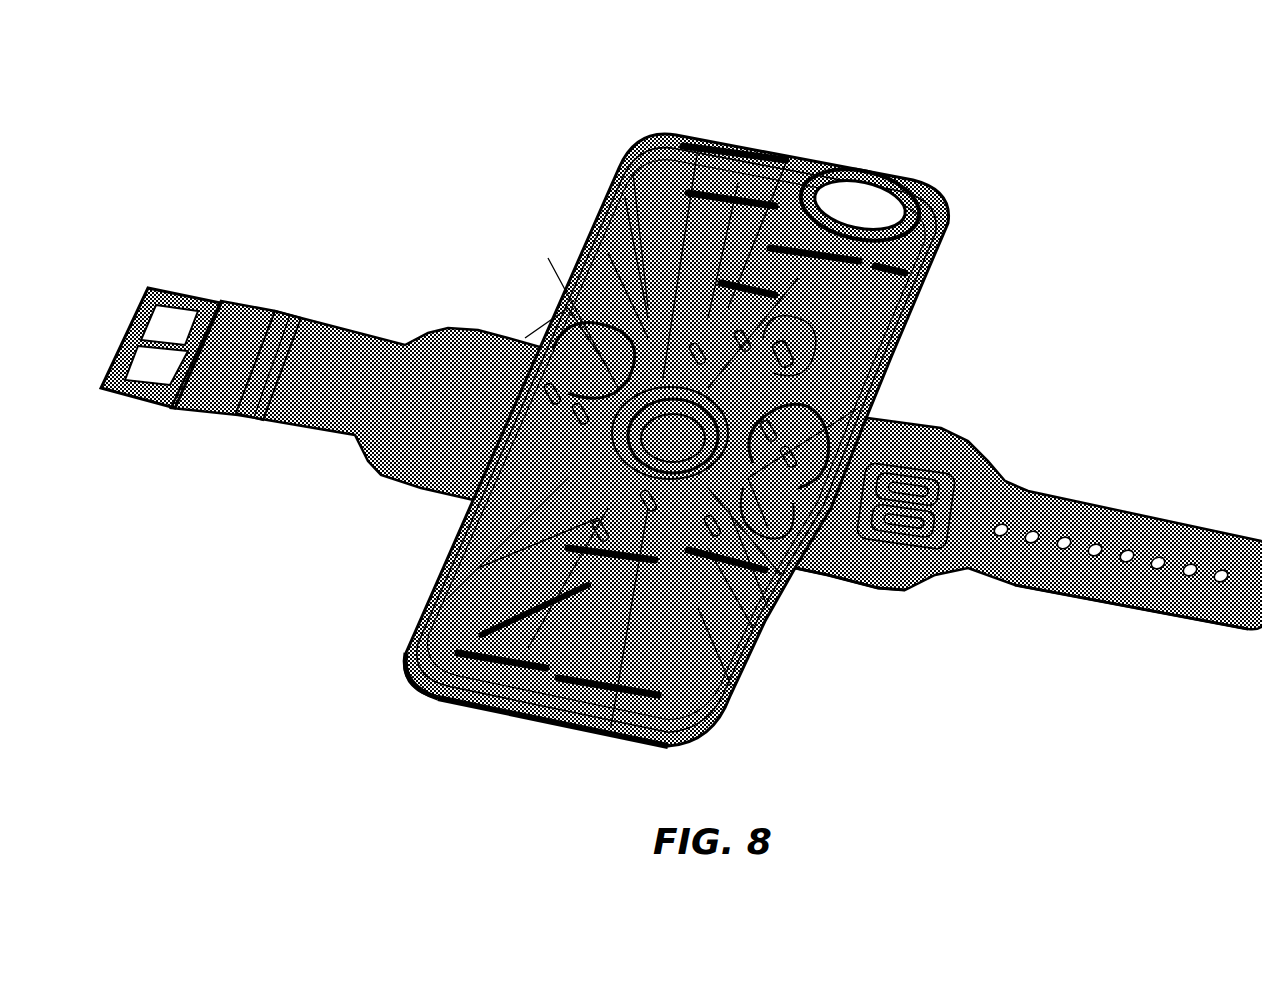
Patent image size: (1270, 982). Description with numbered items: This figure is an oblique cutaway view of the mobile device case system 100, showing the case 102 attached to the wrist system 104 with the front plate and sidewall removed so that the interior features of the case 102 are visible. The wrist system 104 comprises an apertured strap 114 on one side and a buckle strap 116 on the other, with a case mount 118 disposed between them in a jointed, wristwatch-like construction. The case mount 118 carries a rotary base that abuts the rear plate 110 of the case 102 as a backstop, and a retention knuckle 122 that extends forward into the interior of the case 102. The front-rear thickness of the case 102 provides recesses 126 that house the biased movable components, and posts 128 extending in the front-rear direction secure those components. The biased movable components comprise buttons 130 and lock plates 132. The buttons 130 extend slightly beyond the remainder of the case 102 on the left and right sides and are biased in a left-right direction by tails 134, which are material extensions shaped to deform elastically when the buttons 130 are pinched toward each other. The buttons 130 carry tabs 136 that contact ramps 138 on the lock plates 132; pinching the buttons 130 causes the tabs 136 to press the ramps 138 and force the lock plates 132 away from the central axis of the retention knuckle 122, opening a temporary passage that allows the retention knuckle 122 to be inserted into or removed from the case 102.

The mobile device case system (MDCS) 100 is at (681, 410).
The case 102 is at (697, 427).
The wrist system 104 is at (681, 458).
The rear plate 110 is at (740, 160).
The apertured strap 114 is at (1067, 490).
The buckle strap 116 is at (347, 337).
The case mount 118 is at (783, 347).
The retention knuckle 122 is at (886, 346).
The recesses 126 is at (807, 160).
The posts 128 is at (813, 213).
The buttons 130 is at (863, 398).
The lock plates 132 is at (690, 145).
The tails 134 is at (780, 150).
The tabs 136 is at (617, 190).
The ramps 138 is at (557, 310).